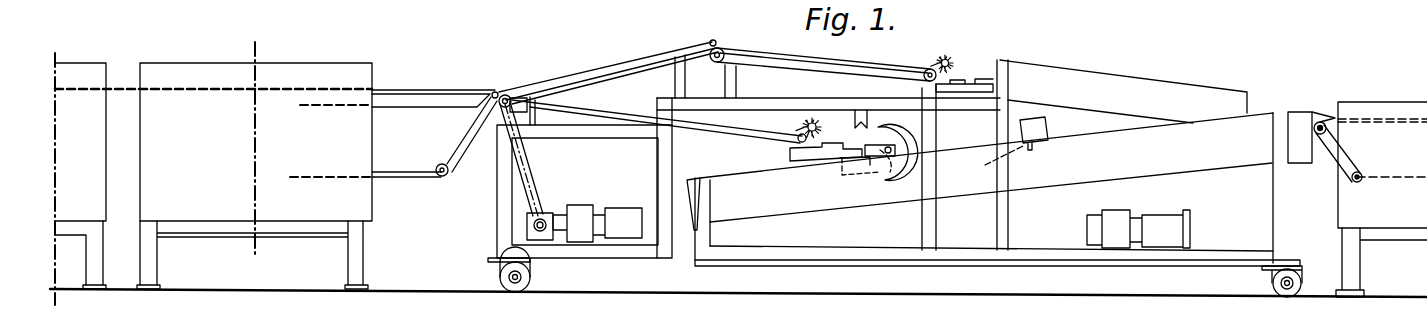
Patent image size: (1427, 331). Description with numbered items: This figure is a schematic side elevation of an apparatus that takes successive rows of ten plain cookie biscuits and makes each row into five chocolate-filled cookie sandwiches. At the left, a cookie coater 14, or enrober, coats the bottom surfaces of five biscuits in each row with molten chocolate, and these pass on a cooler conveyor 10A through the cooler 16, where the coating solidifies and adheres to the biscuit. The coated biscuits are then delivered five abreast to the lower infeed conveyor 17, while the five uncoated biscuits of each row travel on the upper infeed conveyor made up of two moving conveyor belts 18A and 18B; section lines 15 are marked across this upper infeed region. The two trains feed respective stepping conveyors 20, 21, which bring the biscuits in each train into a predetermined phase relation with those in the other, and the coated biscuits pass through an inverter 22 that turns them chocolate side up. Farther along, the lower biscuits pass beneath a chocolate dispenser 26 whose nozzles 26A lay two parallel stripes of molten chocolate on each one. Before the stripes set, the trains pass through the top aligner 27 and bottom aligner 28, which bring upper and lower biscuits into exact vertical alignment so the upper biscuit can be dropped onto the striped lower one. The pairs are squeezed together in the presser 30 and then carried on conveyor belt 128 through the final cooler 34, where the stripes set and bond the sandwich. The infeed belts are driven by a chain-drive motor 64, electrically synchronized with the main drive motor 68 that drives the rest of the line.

The cookie coater 14 is at (88, 138).
The cooler 16 is at (338, 73).
The cooler conveyor 10A is at (408, 90).
The section line 15 is at (520, 52).
The conveyor belt 18A is at (533, 80).
The conveyor belt 18B is at (771, 70).
The lower infeed conveyor 17 is at (710, 137).
The stepping conveyor 20 is at (960, 92).
The stepping conveyor 21 is at (790, 152).
The inverter 22 is at (880, 167).
The chocolate dispenser 26 is at (1050, 128).
The nozzle 26A is at (984, 165).
The top aligner 27 is at (1093, 75).
The bottom aligner 28 is at (1236, 170).
The presser 30 is at (1258, 121).
The final cooler 34 is at (1400, 162).
The chain-drive motor 64 is at (612, 213).
The main drive motor 68 is at (1170, 233).
The conveyor belt 128 is at (1335, 160).